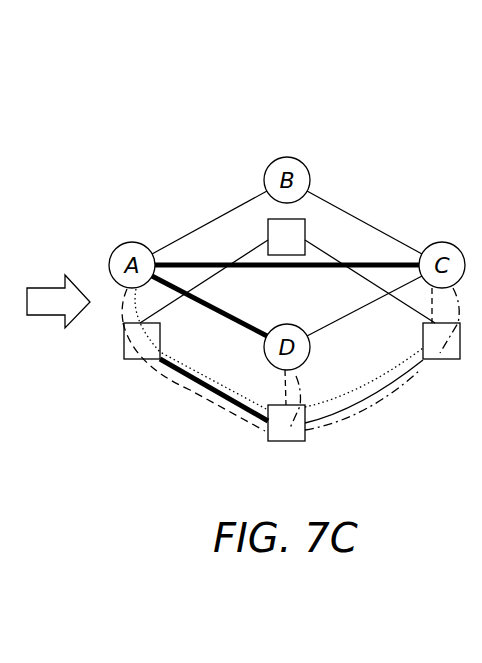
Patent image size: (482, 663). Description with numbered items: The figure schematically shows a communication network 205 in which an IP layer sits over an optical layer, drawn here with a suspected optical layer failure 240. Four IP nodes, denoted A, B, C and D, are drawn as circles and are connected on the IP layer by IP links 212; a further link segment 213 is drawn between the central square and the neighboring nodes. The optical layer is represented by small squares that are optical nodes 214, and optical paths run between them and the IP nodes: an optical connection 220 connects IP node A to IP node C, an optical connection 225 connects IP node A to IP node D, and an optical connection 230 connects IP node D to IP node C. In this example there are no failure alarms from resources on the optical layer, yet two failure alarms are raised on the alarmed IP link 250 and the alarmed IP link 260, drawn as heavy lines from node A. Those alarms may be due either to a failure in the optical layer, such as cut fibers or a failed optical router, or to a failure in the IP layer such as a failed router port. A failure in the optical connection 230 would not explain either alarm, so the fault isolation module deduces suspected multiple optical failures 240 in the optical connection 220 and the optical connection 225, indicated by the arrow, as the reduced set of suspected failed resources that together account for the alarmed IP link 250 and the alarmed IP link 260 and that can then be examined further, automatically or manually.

The communication network 205 is at (158, 81).
The IP links 212 is at (368, 216).
The intermediate node / link segment 213 is at (316, 243).
The optical nodes 214 is at (283, 442).
The optical connection 220 is at (157, 362).
The optical connection 225 is at (240, 421).
The optical connection 230 is at (370, 403).
The suspected optical layer failure 240 is at (184, 380).
The alarmed IP link 250 is at (163, 255).
The alarmed IP link 260 is at (212, 263).